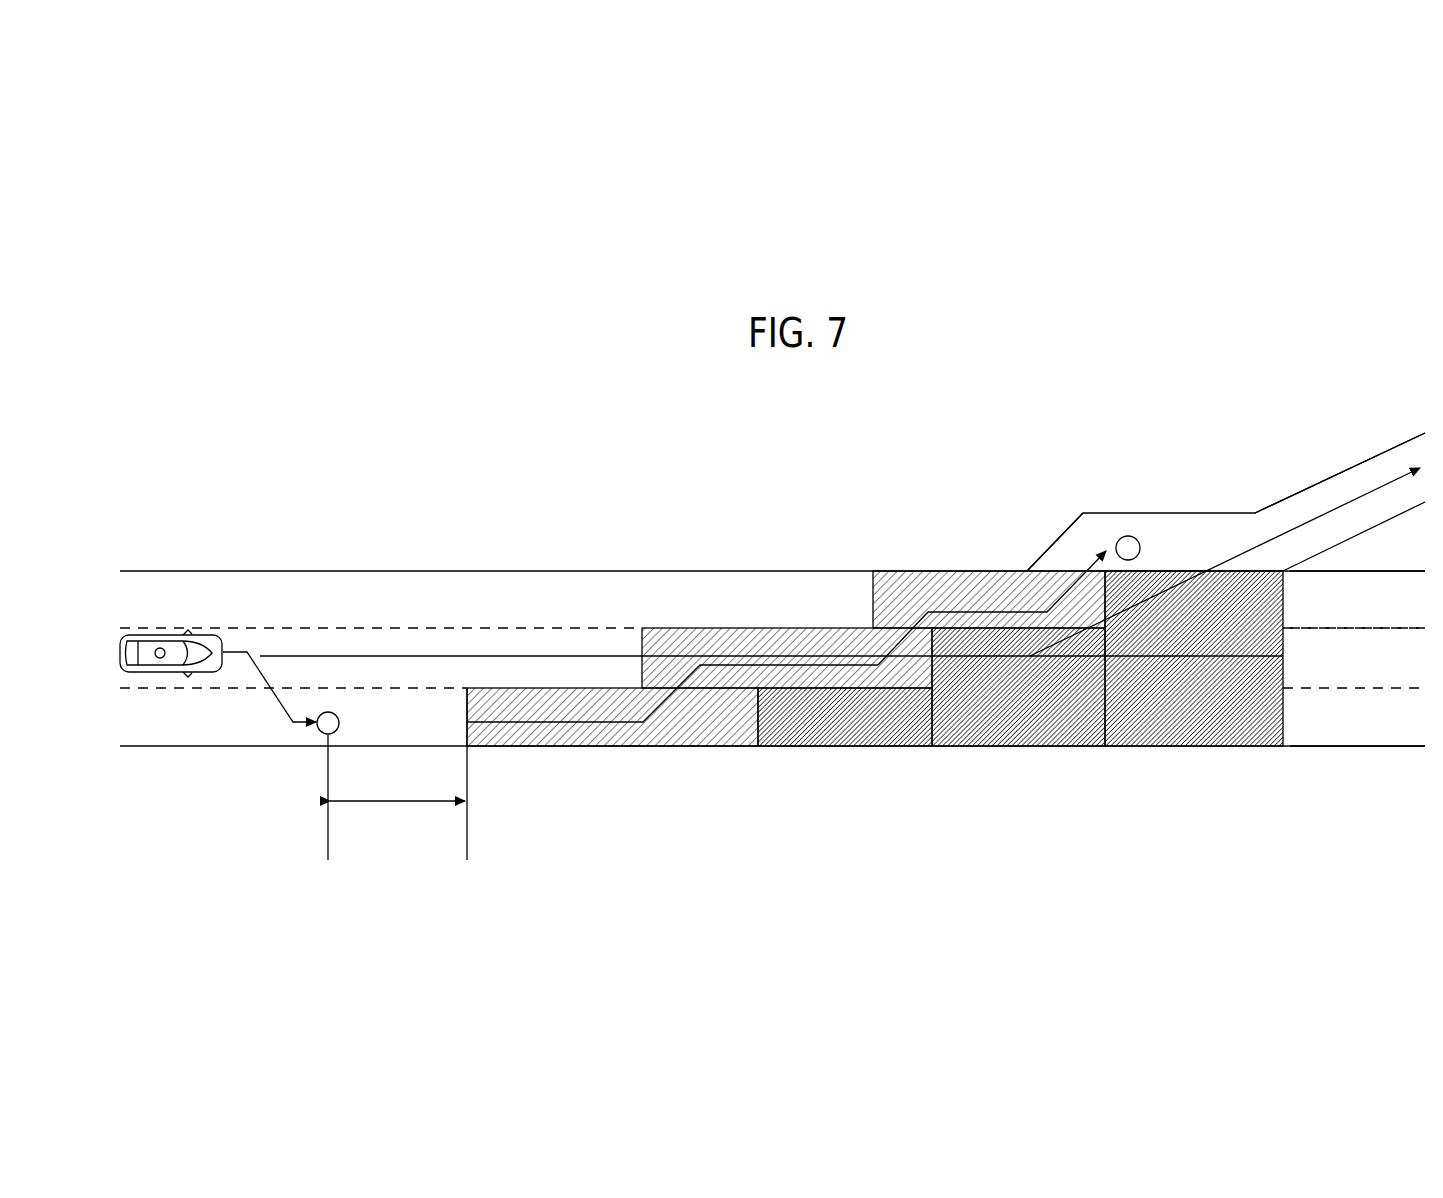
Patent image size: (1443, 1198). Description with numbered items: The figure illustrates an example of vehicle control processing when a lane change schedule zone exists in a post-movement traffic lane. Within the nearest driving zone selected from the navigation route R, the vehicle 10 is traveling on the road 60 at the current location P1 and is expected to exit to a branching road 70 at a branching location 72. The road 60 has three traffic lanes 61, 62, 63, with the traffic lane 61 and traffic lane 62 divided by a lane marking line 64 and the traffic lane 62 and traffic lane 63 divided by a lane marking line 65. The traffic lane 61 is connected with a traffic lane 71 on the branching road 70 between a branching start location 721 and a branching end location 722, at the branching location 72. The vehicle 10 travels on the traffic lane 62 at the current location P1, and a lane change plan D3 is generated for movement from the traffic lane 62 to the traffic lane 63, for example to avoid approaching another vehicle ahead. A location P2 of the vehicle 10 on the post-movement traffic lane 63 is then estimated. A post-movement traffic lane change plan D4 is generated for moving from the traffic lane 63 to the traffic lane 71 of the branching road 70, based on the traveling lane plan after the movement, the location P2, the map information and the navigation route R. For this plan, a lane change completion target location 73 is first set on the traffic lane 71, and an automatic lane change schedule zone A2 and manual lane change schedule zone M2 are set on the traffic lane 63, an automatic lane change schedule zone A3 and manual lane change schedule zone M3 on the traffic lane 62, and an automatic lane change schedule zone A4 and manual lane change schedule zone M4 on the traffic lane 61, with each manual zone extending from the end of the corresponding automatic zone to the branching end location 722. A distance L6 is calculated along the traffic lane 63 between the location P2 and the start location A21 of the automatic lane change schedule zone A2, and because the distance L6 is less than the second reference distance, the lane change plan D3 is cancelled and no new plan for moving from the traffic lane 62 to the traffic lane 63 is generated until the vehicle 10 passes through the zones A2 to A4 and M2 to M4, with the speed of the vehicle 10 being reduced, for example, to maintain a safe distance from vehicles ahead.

The vehicle 10 is at (142, 635).
The road 60 is at (811, 568).
The traffic lane 61 is at (1356, 608).
The traffic lane 62 is at (1356, 670).
The traffic lane 63 is at (1356, 732).
The lane marking line 64 is at (1366, 627).
The lane marking line 65 is at (1366, 688).
The branching road 70 is at (1368, 448).
The traffic lane 71 is at (1198, 551).
The branching location 72 is at (1164, 509).
The branching start location 721 is at (1028, 570).
The branching end location 722 is at (1284, 575).
The lane change completion target location 73 is at (1118, 538).
The navigation route R is at (533, 653).
The current location P1 is at (162, 648).
The location of the vehicle on the post-movement traffic lane P2 is at (348, 724).
The lane change plan D3 is at (277, 700).
The post-movement traffic lane change plan D4 is at (578, 723).
The distance L6 is at (396, 797).
The automatic lane change schedule zone A2 is at (703, 723).
The start location of the automatic lane change schedule zone A21 is at (468, 748).
The automatic lane change schedule zone A3 is at (673, 640).
The automatic lane change schedule zone A4 is at (943, 571).
The manual lane change schedule zone M2 is at (851, 725).
The manual lane change schedule zone M3 is at (998, 685).
The manual lane change schedule zone M4 is at (1170, 620).